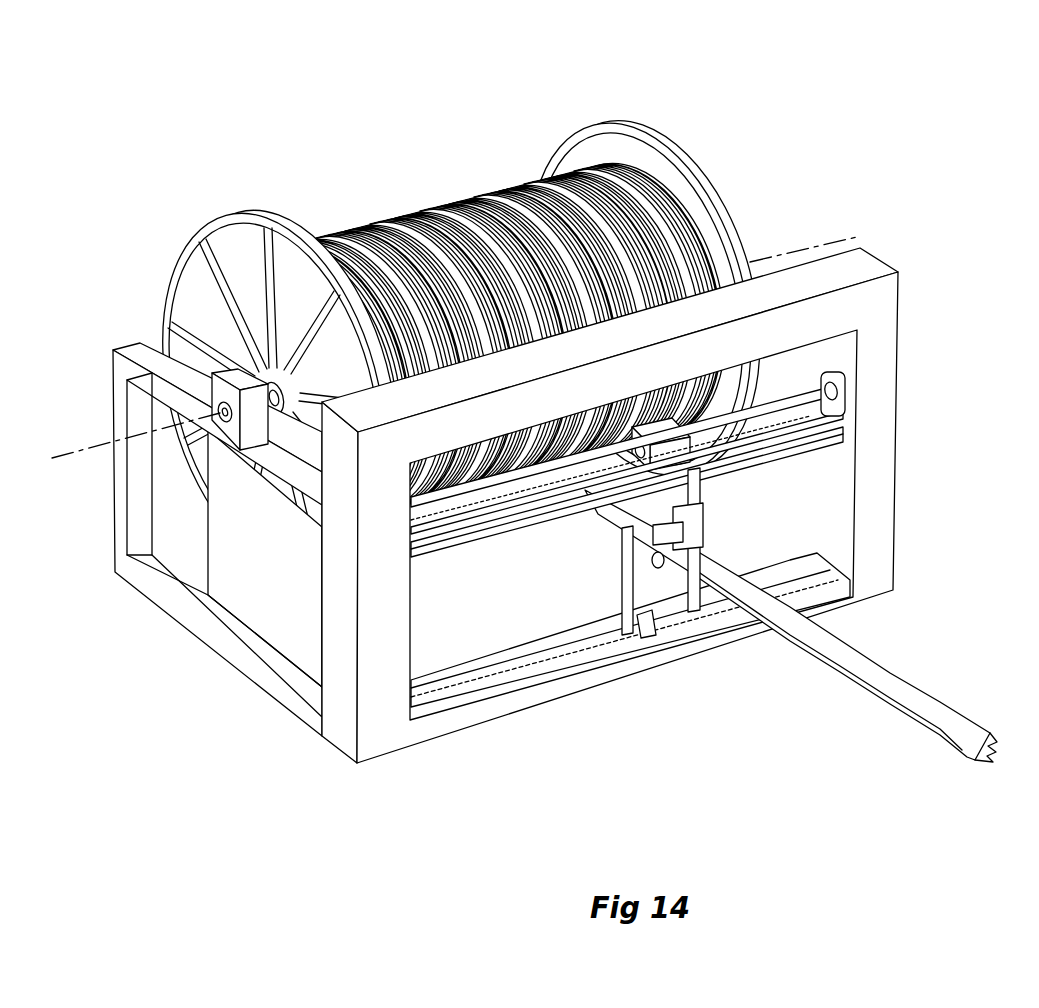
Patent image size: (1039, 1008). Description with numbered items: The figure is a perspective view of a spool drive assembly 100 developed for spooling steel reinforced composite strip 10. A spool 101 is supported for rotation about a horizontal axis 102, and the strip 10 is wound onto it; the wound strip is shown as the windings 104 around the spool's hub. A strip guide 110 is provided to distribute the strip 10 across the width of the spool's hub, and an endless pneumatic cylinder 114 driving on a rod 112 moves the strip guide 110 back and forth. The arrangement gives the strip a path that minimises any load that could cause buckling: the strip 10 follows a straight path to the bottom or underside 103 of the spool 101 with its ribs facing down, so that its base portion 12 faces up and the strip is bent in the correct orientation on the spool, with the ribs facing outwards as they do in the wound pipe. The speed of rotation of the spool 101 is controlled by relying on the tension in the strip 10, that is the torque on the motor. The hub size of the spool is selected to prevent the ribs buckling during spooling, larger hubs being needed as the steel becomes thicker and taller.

The spool drive assembly 100 is at (412, 160).
The spool 101 is at (243, 257).
The horizontal axis 102 is at (80, 447).
The bottom or underside of the spool 103 is at (470, 490).
The wound cable 104 is at (495, 190).
The strip guide 110 is at (660, 563).
The rod 112 is at (833, 432).
The endless pneumatic cylinder 114 is at (712, 452).
The steel reinforced composite strip 10 is at (853, 700).
The base portion 12 is at (921, 713).